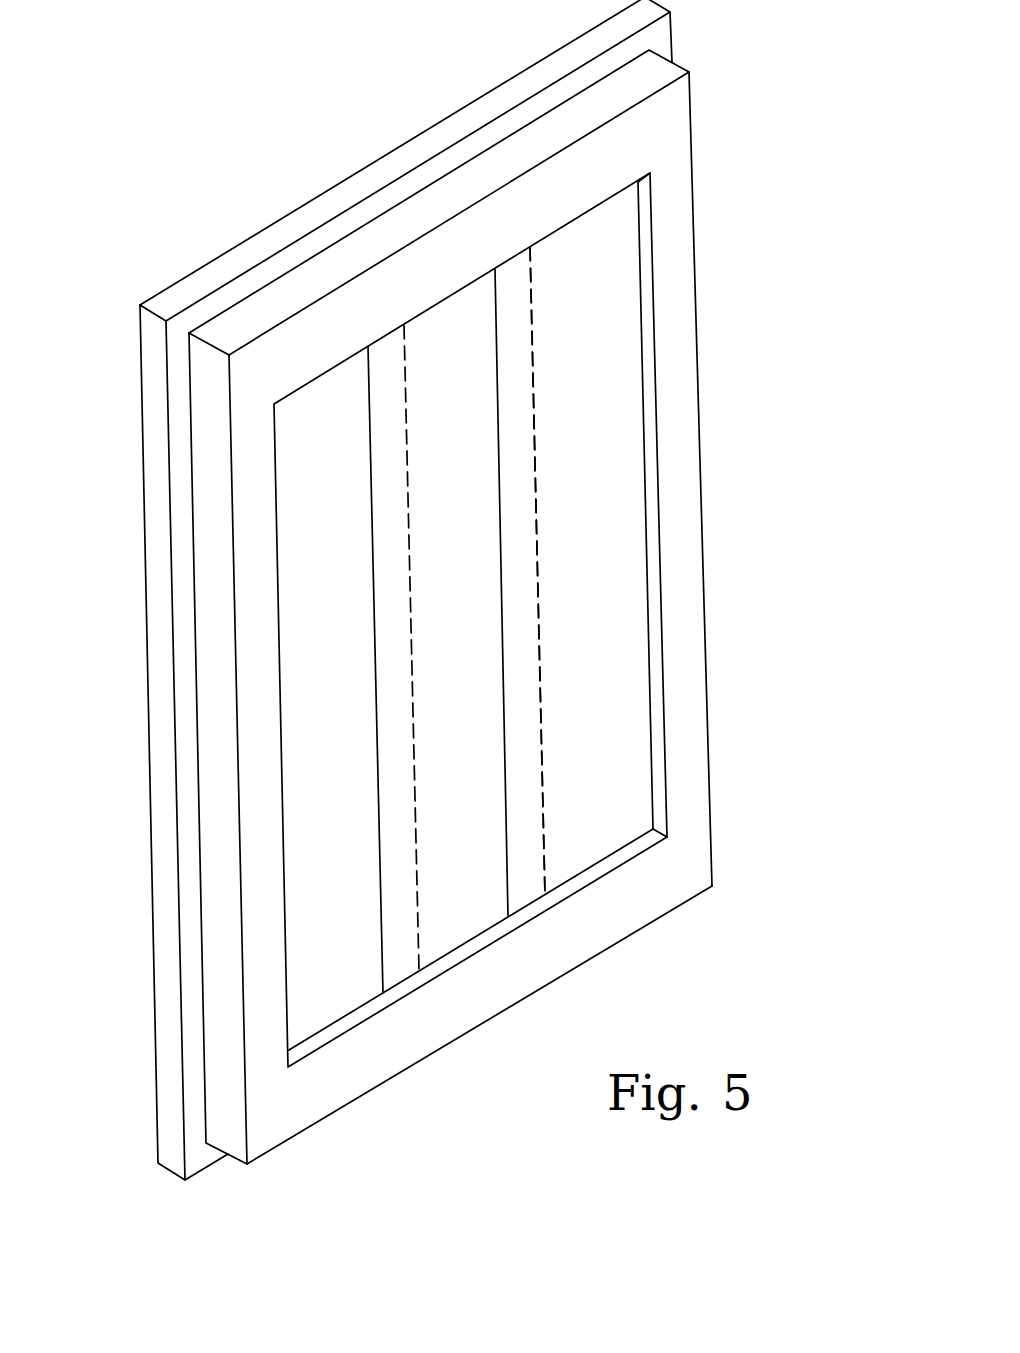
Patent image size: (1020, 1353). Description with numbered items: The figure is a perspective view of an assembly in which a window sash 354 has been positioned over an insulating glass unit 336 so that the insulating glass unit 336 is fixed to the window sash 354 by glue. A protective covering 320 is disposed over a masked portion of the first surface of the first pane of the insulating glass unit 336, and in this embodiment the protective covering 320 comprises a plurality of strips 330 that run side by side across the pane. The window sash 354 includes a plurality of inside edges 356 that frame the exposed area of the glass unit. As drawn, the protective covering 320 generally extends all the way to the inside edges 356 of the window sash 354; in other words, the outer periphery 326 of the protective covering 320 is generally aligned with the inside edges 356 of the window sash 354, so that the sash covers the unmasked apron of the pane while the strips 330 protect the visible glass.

The protective covering 320 is at (598, 757).
The outer periphery of protective covering 326 is at (645, 535).
The strips 330 is at (585, 335).
The insulating glass unit 336 is at (605, 442).
The window sash 354 is at (345, 1107).
The inside edges 356 is at (652, 638).